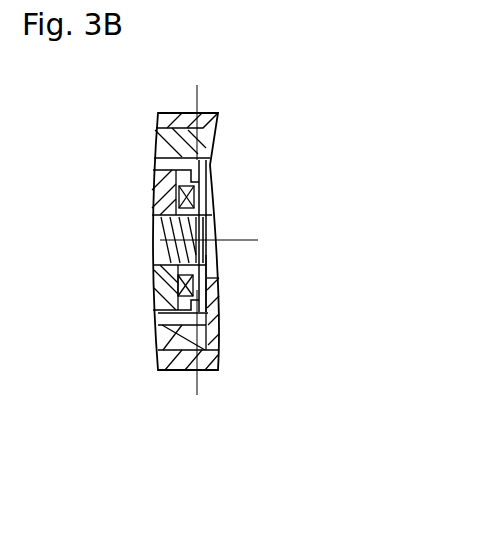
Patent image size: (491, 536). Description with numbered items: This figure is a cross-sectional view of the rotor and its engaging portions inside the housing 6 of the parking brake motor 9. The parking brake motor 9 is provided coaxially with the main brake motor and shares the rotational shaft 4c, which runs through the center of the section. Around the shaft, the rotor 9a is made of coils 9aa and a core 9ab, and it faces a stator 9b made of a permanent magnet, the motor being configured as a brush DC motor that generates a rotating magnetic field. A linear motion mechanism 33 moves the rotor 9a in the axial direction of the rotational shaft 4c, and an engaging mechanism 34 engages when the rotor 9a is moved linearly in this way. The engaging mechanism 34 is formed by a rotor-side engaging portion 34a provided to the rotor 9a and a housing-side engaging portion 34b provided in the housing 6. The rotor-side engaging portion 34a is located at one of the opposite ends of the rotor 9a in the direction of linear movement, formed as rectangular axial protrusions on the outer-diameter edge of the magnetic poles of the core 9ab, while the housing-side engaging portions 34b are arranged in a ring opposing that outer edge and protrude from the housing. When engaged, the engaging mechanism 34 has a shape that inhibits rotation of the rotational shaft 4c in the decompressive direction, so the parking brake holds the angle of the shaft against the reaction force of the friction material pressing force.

The housing 6 is at (173, 118).
The stator 9b is at (158, 136).
The engaging mechanism 34 is at (213, 160).
The core 9ab is at (165, 188).
The parking brake motor 9 is at (153, 206).
The coils 9aa is at (197, 196).
The linear motion mechanism 33 is at (198, 240).
The rotational shaft 4c is at (165, 252).
The rotor 9a is at (167, 292).
The rotor-side engaging portion 34a is at (172, 372).
The housing-side engaging portion 34b is at (221, 305).